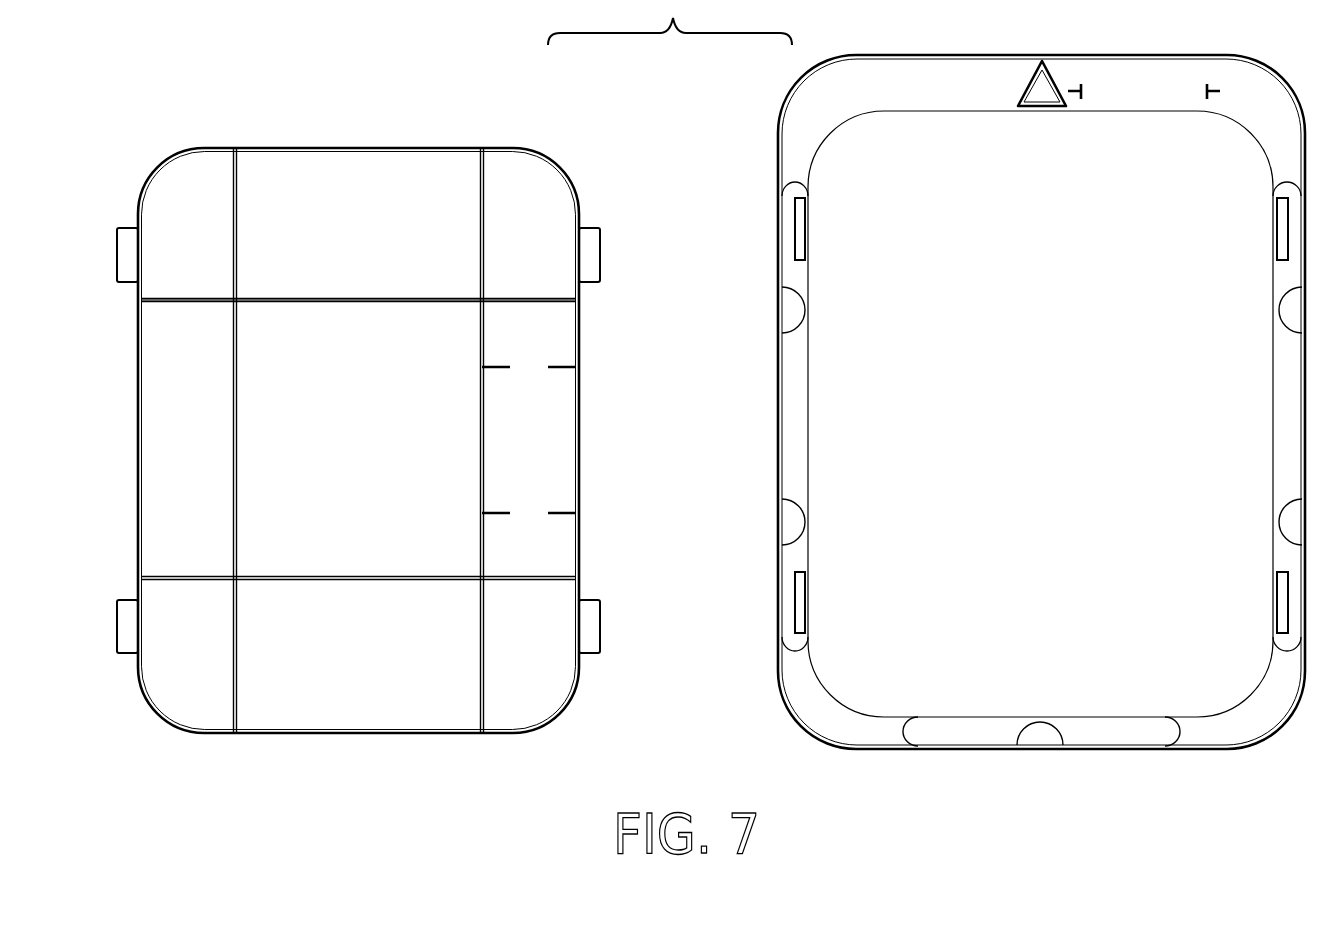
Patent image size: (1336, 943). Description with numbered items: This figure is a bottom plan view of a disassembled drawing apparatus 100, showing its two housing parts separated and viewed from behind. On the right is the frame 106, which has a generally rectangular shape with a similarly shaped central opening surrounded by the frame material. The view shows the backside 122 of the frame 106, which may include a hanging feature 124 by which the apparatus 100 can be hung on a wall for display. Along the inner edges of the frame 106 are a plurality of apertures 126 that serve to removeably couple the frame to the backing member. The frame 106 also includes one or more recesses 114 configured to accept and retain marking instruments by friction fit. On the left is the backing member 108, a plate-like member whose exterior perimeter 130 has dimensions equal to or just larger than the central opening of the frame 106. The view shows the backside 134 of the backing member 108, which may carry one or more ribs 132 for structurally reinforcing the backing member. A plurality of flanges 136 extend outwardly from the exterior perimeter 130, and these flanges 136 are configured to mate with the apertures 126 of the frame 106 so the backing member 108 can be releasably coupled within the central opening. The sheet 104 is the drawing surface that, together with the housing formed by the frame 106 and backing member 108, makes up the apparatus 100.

The drawing apparatus 100 is at (460, 83).
The sheet 104 is at (1073, 445).
The frame 106 is at (800, 698).
The backing member 108 is at (370, 178).
The recesses 114 is at (958, 733).
The backside of the frame 122 is at (910, 95).
The hanging feature 124 is at (1028, 82).
The apertures 126 is at (806, 230).
The exterior perimeter 130 is at (238, 148).
The ribs 132 is at (238, 508).
The backside of the backing member 134 is at (376, 445).
The flanges 136 is at (127, 250).